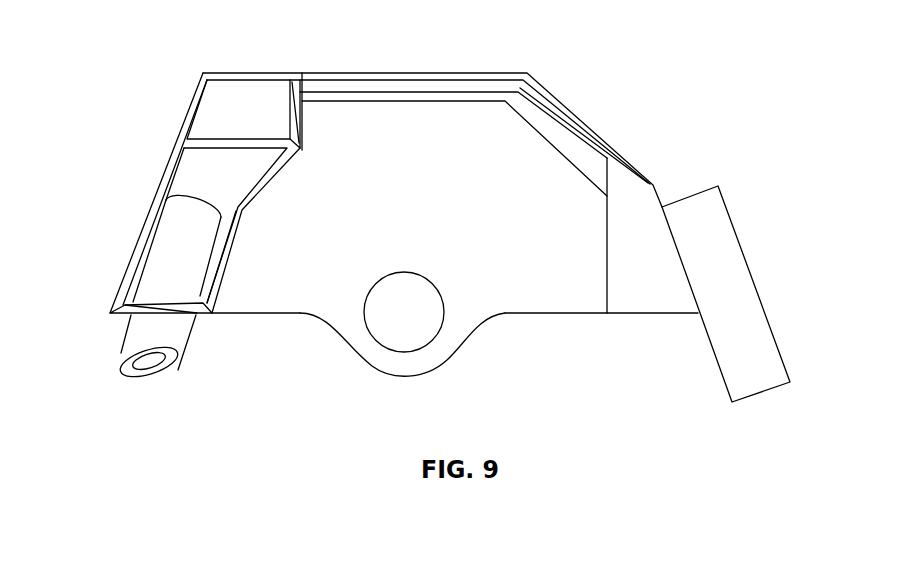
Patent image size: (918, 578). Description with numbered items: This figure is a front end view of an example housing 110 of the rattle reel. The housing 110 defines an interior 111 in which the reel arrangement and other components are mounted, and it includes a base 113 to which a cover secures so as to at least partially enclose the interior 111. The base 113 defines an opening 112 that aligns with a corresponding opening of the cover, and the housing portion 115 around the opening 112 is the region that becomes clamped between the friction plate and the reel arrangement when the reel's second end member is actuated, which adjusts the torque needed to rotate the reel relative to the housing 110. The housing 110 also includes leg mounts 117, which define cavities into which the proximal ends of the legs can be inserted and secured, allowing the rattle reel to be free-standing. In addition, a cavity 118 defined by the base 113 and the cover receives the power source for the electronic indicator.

The housing 110 is at (550, 78).
The interior 111 is at (430, 206).
The opening 112 is at (397, 348).
The base 113 is at (582, 121).
The housing portion 115 is at (459, 332).
The leg mount 117 is at (130, 331).
The cavity 118 is at (212, 110).